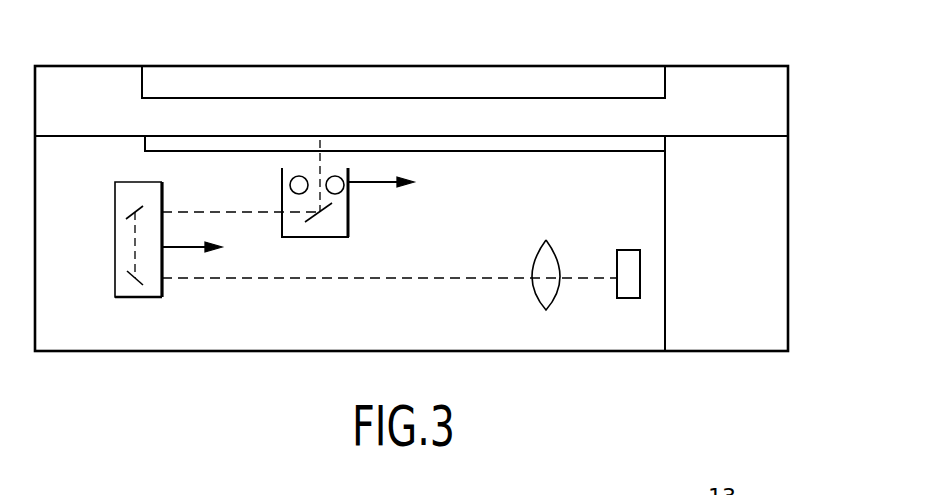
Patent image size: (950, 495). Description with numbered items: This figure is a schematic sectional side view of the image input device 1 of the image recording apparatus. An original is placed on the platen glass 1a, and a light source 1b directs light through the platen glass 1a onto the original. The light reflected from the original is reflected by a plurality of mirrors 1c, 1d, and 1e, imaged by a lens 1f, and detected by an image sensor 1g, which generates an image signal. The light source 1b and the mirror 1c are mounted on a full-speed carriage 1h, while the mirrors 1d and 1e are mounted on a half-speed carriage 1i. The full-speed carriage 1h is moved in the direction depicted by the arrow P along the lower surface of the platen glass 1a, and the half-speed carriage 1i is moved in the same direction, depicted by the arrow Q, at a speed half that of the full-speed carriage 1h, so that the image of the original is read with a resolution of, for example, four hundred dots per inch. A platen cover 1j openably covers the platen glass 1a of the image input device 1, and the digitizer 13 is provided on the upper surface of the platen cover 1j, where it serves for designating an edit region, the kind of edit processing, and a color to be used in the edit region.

The image input device 1 is at (508, 351).
The platen glass 1a is at (568, 152).
The light source 1b is at (296, 176).
The mirror 1c is at (325, 215).
The mirror 1d is at (137, 210).
The mirror 1e is at (130, 280).
The lens 1f is at (537, 257).
The image sensor 1g is at (622, 298).
The full-speed carriage 1h is at (289, 197).
The half-speed carriage 1i is at (162, 297).
The platen cover 1j is at (730, 66).
The digitizer 13 is at (468, 66).
The arrow P is at (367, 182).
The arrow Q is at (180, 247).